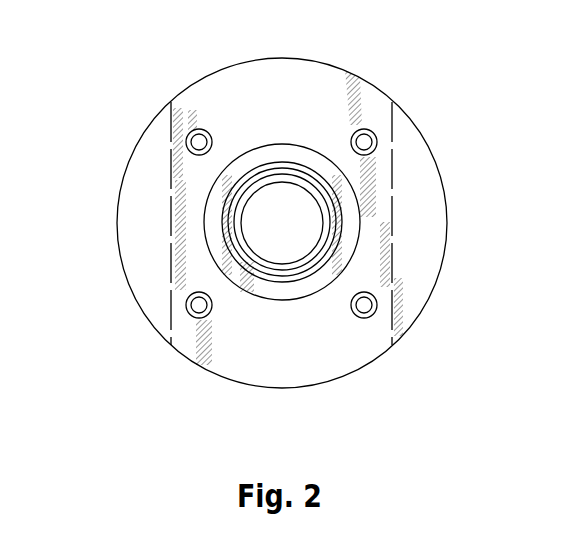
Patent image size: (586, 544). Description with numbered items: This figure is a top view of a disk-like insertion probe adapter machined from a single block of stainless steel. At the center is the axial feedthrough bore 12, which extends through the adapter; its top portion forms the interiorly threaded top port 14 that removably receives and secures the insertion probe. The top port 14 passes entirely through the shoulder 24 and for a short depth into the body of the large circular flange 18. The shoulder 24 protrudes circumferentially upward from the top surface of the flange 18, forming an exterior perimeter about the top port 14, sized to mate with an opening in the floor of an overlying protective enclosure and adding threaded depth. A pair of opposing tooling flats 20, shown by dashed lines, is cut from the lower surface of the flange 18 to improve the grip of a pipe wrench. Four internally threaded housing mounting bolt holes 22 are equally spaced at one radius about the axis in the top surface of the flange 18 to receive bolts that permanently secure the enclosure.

The axial feedthrough bore 12 is at (262, 222).
The interiorly threaded top port 14 is at (327, 228).
The circular flange 18 is at (273, 344).
The tooling flats 20 is at (175, 270).
The housing mounting bolt holes 22 is at (193, 313).
The shoulder 24 is at (215, 207).